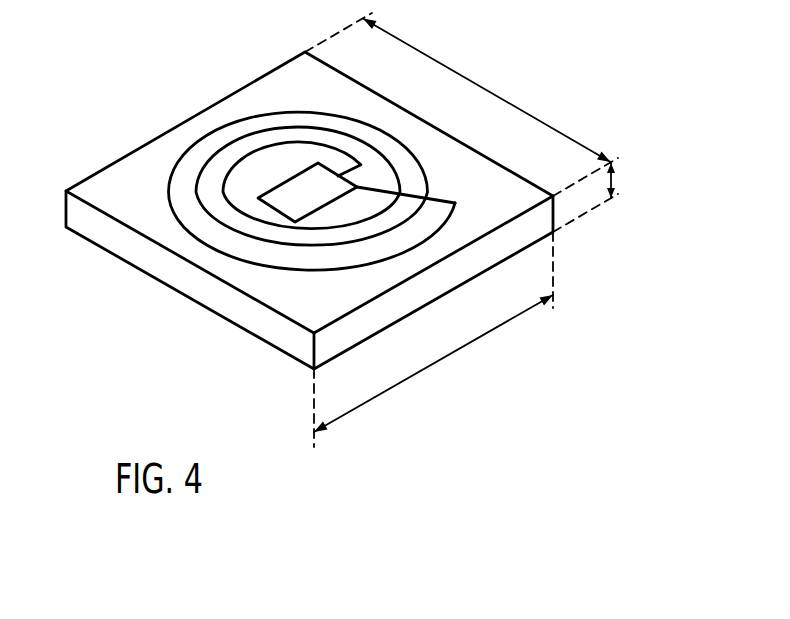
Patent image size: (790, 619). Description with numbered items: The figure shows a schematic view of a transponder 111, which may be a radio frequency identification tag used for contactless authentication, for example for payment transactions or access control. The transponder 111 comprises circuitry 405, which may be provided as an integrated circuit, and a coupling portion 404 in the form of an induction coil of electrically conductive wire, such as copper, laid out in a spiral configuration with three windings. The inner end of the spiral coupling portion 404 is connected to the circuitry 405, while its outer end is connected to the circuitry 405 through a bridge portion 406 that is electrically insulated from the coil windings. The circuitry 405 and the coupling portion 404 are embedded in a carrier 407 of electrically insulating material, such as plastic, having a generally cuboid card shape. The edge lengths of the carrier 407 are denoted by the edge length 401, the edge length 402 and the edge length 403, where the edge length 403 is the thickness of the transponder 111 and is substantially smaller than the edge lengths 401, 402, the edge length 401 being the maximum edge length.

The transponder 111 is at (104, 63).
The edge length 401 is at (470, 346).
The edge length 402 is at (482, 90).
The edge length (thickness) 403 is at (614, 182).
The coupling portion 404 is at (267, 130).
The circuitry 405 is at (273, 188).
The bridge portion 406 is at (445, 200).
The carrier 407 is at (108, 180).